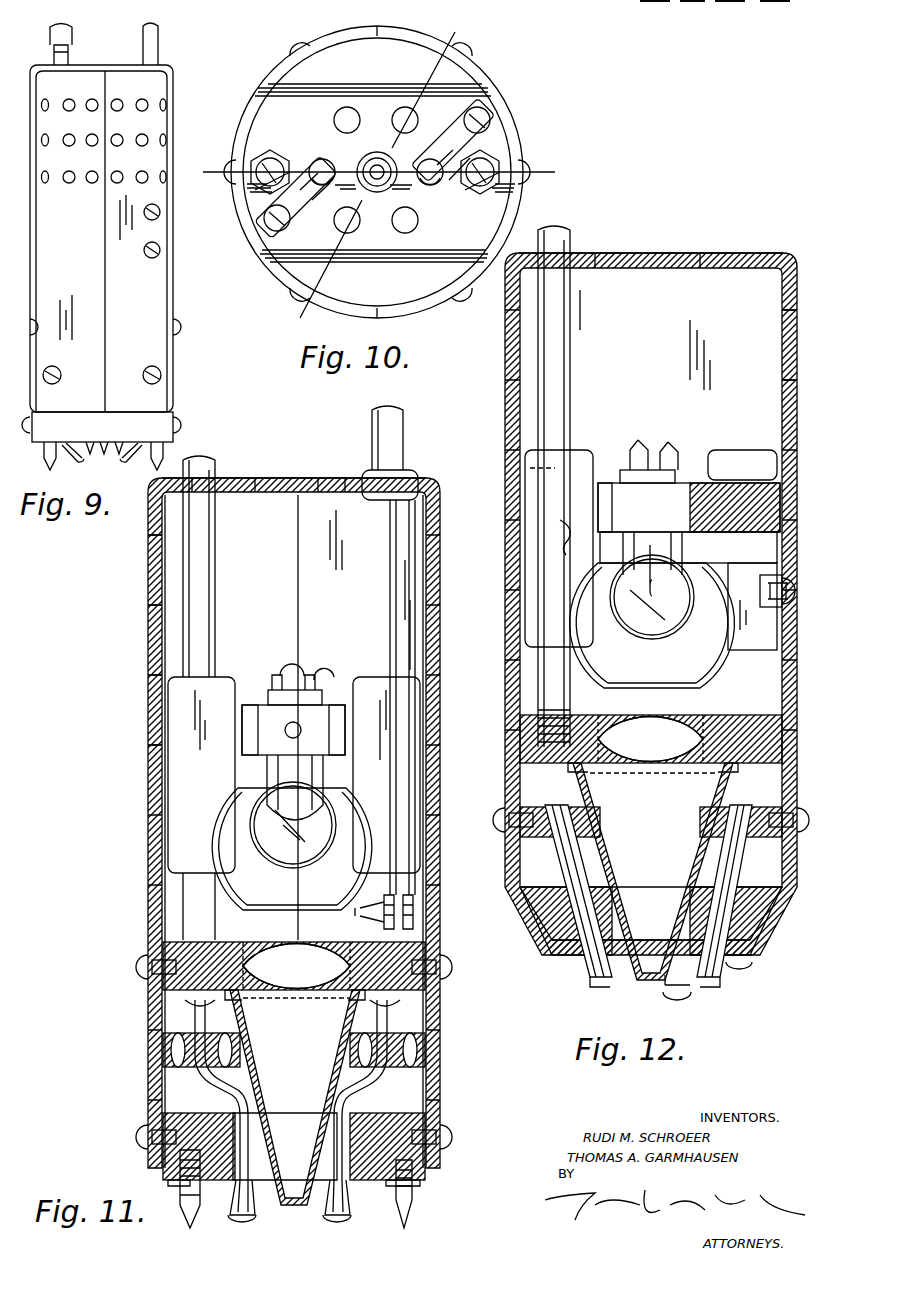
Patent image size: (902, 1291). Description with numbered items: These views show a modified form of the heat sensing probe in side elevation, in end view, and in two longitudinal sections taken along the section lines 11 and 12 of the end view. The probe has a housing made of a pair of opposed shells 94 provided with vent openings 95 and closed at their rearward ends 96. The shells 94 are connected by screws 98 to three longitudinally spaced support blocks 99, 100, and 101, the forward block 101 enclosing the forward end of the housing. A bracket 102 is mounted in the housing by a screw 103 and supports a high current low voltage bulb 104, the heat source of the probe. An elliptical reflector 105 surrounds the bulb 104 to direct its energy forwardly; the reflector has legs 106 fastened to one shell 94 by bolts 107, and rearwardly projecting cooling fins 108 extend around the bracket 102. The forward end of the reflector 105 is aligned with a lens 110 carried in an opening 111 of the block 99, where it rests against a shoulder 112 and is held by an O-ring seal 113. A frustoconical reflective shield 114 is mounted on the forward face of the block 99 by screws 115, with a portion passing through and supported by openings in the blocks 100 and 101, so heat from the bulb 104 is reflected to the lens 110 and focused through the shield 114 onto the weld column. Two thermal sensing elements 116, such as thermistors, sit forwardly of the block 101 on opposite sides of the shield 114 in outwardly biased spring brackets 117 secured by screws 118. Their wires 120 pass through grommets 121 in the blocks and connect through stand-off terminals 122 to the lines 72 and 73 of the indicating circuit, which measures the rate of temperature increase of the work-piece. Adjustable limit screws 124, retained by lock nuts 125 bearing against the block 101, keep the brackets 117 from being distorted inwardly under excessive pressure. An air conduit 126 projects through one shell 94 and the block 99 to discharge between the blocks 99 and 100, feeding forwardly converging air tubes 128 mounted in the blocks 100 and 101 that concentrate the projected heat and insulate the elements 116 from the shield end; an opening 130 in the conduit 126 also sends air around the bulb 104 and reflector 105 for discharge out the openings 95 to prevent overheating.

In FIG. 10, the section line 11— 11 is at (208, 200).
In FIG. 10, the section line 12— 12 is at (480, 44).
In FIG. 11, the line 72 is at (398, 800).
In FIG. 11, the line 73 is at (416, 815).
In FIG. 9, the opposed shells 94 is at (76, 279).
In FIG. 10, the opposed shells 94 is at (276, 66).
In FIG. 11, the opposed shells 94 is at (150, 743).
In FIG. 12, the opposed shells 94 is at (795, 268).
In FIG. 9, the vent openings 95 is at (142, 140).
In FIG. 11, the vent openings 95 is at (148, 545).
In FIG. 12, the vent openings 95 is at (790, 322).
In FIG. 11, the closed rearward end 96 is at (244, 478).
In FIG. 12, the closed rearward end 96 is at (688, 256).
In FIG. 9, the screws 98 is at (158, 372).
In FIG. 11, the screws 98 is at (148, 968).
In FIG. 12, the screws 98 is at (505, 822).
In FIG. 11, the support block 99 is at (165, 950).
In FIG. 12, the support block 99 is at (770, 738).
In FIG. 11, the support block 100 is at (165, 1052).
In FIG. 12, the support block 100 is at (782, 795).
In FIG. 9, the support block 101 is at (150, 430).
In FIG. 10, the support block 101 is at (422, 262).
In FIG. 11, the support block 101 is at (165, 1118).
In FIG. 12, the support block 101 is at (760, 892).
In FIG. 11, the bracket 102 is at (262, 700).
In FIG. 12, the bracket 102 is at (735, 482).
In FIG. 11, the screw 103 is at (286, 735).
In FIG. 11, the high current low voltage bulb 104 is at (282, 850).
In FIG. 12, the high current low voltage bulb 104 is at (660, 632).
In FIG. 11, the elliptical reflector 105 is at (225, 820).
In FIG. 12, the elliptical reflector 105 is at (722, 660).
In FIG. 12, the legs 106 is at (758, 566).
In FIG. 12, the bolts 107 is at (800, 580).
In FIG. 11, the cooling fins 108 is at (200, 680).
In FIG. 12, the cooling fins 108 is at (585, 452).
In FIG. 11, the lens 110 is at (295, 985).
In FIG. 12, the lens 110 is at (652, 760).
In FIG. 11, the opening 111 is at (325, 950).
In FIG. 12, the opening 111 is at (610, 735).
In FIG. 11, the shoulder 112 is at (360, 955).
In FIG. 12, the shoulder 112 is at (686, 730).
In FIG. 11, the O-ring seal 113 is at (262, 1000).
In FIG. 10, the frustoconical reflective shield 114 is at (388, 158).
In FIG. 11, the frustoconical reflective shield 114 is at (315, 1094).
In FIG. 12, the frustoconical reflective shield 114 is at (667, 850).
In FIG. 11, the screws 115 is at (190, 1003).
In FIG. 10, the thermal sensing elements 116 is at (322, 159).
In FIG. 11, the thermal sensing elements 116 is at (330, 1218).
In FIG. 12, the thermal sensing elements 116 is at (685, 998).
In FIG. 10, the spring brackets 117 is at (440, 130).
In FIG. 11, the spring brackets 117 is at (400, 1222).
In FIG. 10, the screws 118 is at (490, 126).
In FIG. 11, the screws 118 is at (415, 1183).
In FIG. 12, the screws 118 is at (752, 968).
In FIG. 11, the wires 120 is at (365, 1080).
In FIG. 11, the grommets 121 is at (170, 940).
In FIG. 11, the stand-off terminals 122 is at (416, 910).
In FIG. 10, the adjustable limit screws 124 is at (274, 160).
In FIG. 11, the adjustable limit screws 124 is at (195, 1220).
In FIG. 10, the lock nuts 125 is at (262, 200).
In FIG. 11, the lock nuts 125 is at (172, 1182).
In FIG. 9, the air conduit 126 is at (70, 52).
In FIG. 11, the air conduit 126 is at (205, 578).
In FIG. 12, the air conduit 126 is at (570, 368).
In FIG. 10, the air tubes 128 is at (400, 115).
In FIG. 12, the air tubes 128 is at (590, 970).
In FIG. 12, the opening 130 is at (560, 532).